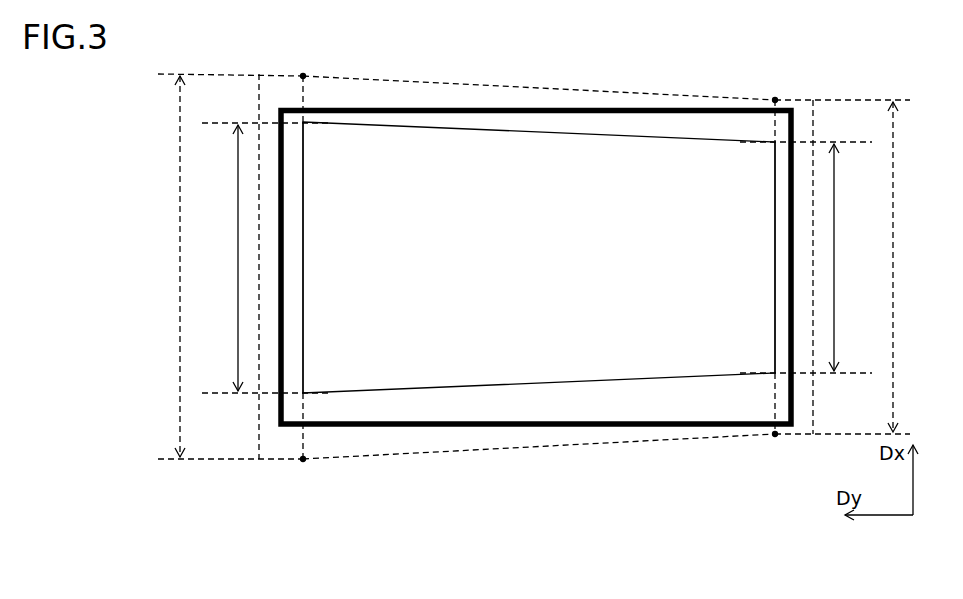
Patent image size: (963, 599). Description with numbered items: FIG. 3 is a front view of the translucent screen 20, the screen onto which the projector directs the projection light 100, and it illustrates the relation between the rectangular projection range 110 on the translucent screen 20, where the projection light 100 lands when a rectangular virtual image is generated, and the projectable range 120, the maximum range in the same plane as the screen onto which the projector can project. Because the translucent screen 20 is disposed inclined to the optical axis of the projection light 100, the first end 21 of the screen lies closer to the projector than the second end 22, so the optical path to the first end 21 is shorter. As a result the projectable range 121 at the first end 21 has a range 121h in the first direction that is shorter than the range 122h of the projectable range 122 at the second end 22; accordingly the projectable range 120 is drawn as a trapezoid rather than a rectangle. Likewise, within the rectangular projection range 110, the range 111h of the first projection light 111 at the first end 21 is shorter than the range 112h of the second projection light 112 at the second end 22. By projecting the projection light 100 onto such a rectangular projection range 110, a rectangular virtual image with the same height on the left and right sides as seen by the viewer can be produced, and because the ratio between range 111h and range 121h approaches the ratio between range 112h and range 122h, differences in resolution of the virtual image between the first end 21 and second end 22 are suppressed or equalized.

The translucent screen 20 is at (398, 106).
The rectangular projection range 110 is at (652, 136).
The projection light 100 is at (542, 215).
The second projection light range at second end 112 is at (305, 396).
The second end 22 is at (329, 321).
The first projection light range at first end 111 is at (773, 376).
The first end 21 is at (742, 331).
The projectable range 120 is at (300, 72).
The projectable range at first end 121 is at (775, 438).
The projectable range at second end 122 is at (303, 463).
The projectable range length at second end 122h is at (180, 268).
The rectangular projection range length at second end 112h is at (238, 252).
The rectangular projection range length at first end 111h is at (835, 258).
The projectable range length at first end 121h is at (893, 272).